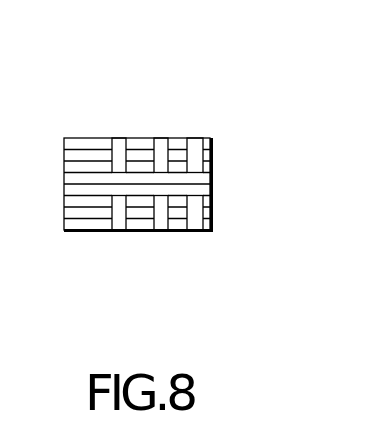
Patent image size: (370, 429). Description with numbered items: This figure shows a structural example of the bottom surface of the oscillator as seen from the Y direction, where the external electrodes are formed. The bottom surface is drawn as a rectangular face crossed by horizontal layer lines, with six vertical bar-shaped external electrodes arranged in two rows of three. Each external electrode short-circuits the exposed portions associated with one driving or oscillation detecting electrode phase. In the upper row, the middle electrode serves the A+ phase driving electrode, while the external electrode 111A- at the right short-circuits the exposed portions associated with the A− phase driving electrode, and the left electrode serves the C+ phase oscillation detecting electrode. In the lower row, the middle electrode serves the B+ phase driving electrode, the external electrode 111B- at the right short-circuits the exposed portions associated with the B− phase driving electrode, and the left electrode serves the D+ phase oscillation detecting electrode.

The external electrode 111A- is at (195, 147).
The external electrode 111B- is at (195, 222).